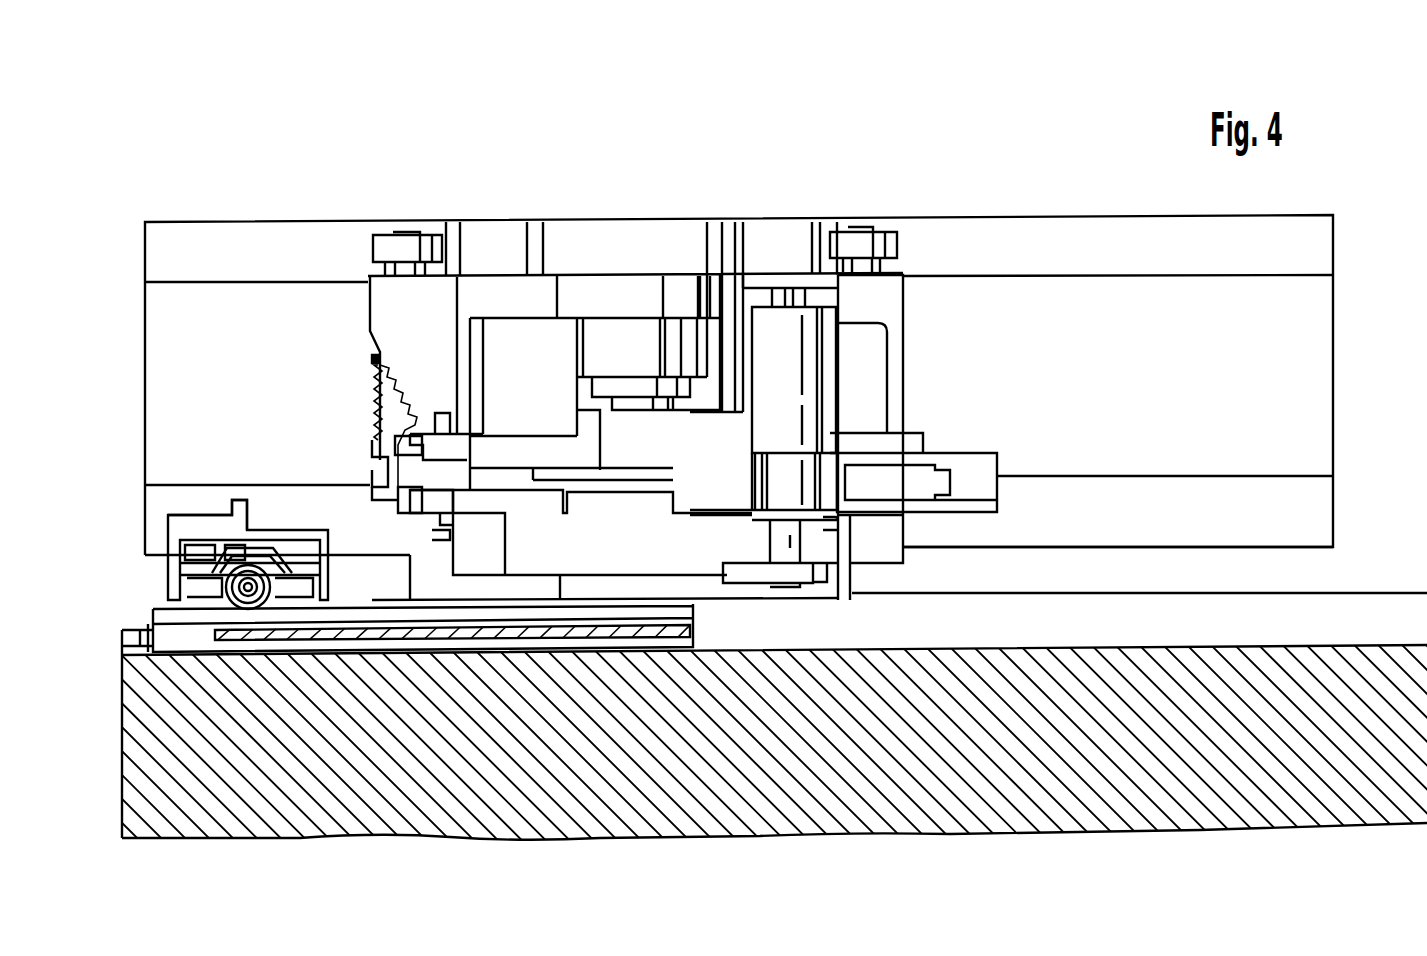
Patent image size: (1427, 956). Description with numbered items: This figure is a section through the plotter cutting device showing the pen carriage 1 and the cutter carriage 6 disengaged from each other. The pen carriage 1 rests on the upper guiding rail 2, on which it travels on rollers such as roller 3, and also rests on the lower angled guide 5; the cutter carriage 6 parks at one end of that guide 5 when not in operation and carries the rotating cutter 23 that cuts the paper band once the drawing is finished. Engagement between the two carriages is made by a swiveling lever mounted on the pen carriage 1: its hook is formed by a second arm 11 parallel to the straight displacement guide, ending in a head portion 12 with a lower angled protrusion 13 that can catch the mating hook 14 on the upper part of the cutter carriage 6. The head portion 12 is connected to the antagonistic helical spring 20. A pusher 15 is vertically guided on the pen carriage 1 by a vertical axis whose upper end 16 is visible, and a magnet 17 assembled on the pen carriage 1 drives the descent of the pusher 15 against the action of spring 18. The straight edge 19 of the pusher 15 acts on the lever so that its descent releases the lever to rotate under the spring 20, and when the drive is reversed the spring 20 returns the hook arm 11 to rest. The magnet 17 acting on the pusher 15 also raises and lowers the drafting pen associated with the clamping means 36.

The pen carriage 1 is at (681, 213).
The upper guiding rail 2 is at (1070, 232).
The roller 3 is at (876, 230).
The lower angled guide 5 is at (1310, 505).
The cutter carriage 6 is at (160, 578).
The second arm 11 is at (368, 445).
The head portion 12 is at (376, 465).
The lower angled protrusion 13 is at (374, 488).
The mating hook 14 is at (232, 504).
The pusher 15 is at (730, 430).
The vertical axis upper end 16 is at (790, 300).
The magnet 17 is at (622, 335).
The spring 18 is at (383, 400).
The straight edge 19 is at (464, 425).
The antagonistic helical spring 20 is at (370, 360).
The rotating cutter 23 is at (205, 592).
The clamping means 36 is at (925, 487).